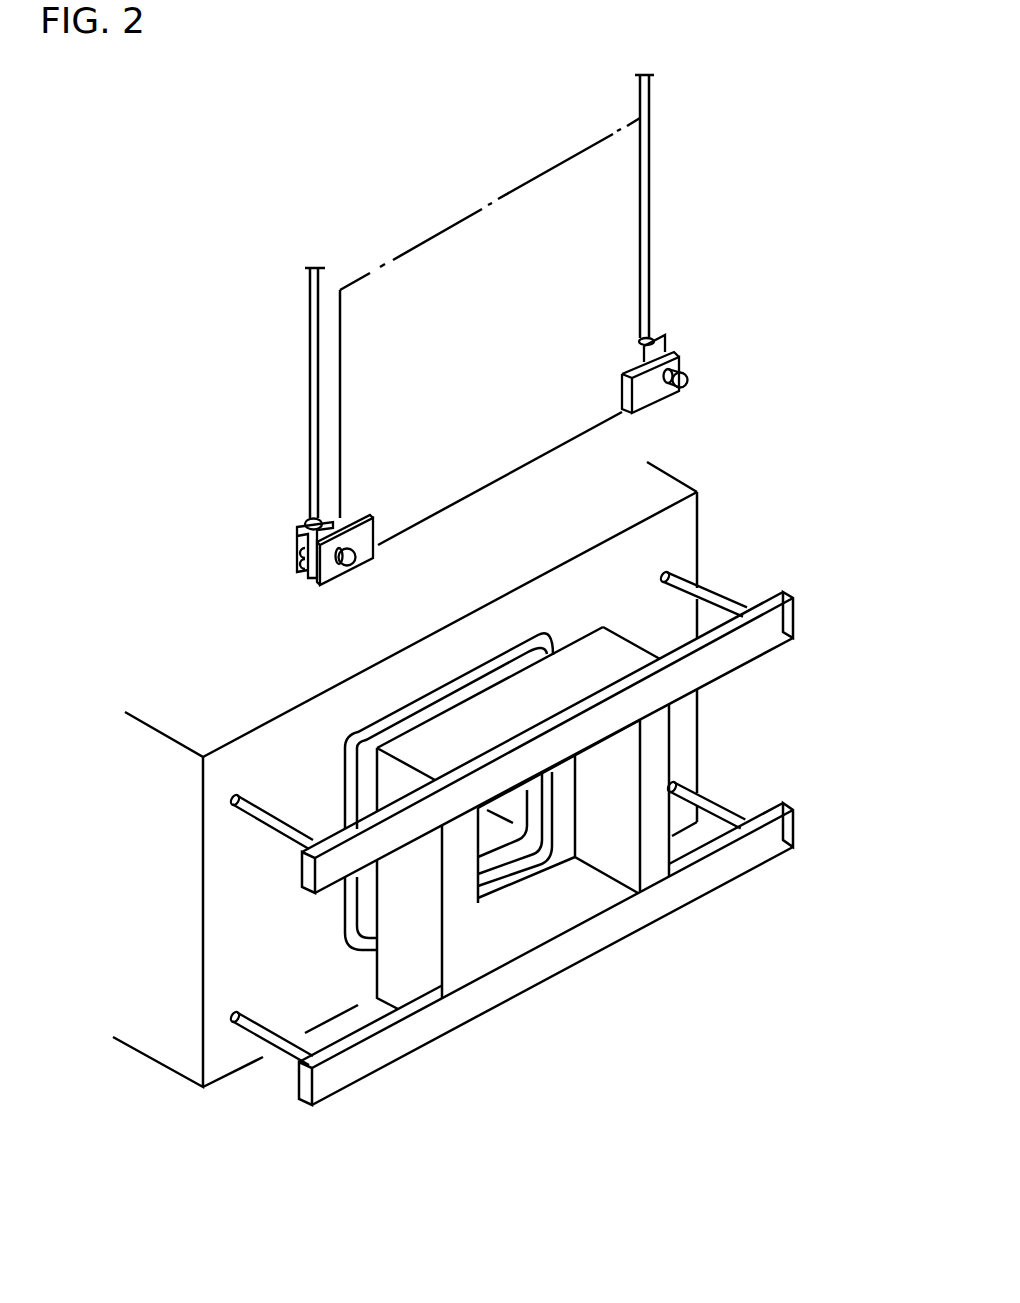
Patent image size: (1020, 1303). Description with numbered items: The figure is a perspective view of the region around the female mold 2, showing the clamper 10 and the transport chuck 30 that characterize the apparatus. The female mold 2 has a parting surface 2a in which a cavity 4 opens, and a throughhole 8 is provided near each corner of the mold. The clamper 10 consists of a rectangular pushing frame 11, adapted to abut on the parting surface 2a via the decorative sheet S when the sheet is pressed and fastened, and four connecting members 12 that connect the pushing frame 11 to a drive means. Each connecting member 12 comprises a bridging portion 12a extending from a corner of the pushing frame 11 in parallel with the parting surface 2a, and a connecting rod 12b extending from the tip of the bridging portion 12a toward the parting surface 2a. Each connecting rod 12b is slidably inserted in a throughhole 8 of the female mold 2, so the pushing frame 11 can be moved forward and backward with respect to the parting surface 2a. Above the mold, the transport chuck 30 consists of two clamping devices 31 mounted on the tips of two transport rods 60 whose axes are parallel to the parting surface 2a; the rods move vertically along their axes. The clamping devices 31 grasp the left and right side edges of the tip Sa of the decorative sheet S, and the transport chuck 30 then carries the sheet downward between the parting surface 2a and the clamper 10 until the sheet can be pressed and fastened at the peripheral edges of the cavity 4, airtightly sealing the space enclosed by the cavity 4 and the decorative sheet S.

The female mold 2 is at (450, 817).
The parting surface 2a is at (683, 519).
The cavity 4 is at (495, 835).
The throughhole 8 is at (662, 572).
The clamper 10 is at (591, 862).
The pushing frame 11 is at (520, 973).
The connecting member 12 is at (591, 862).
The bridging portion 12a is at (728, 647).
The connecting rod 12b is at (718, 596).
The transport chuck 30 is at (454, 494).
The clamping device 31 is at (337, 583).
The transport rod 60 is at (310, 341).
The decorative sheet S is at (490, 328).
The tip of the decorative sheet Sa is at (500, 478).